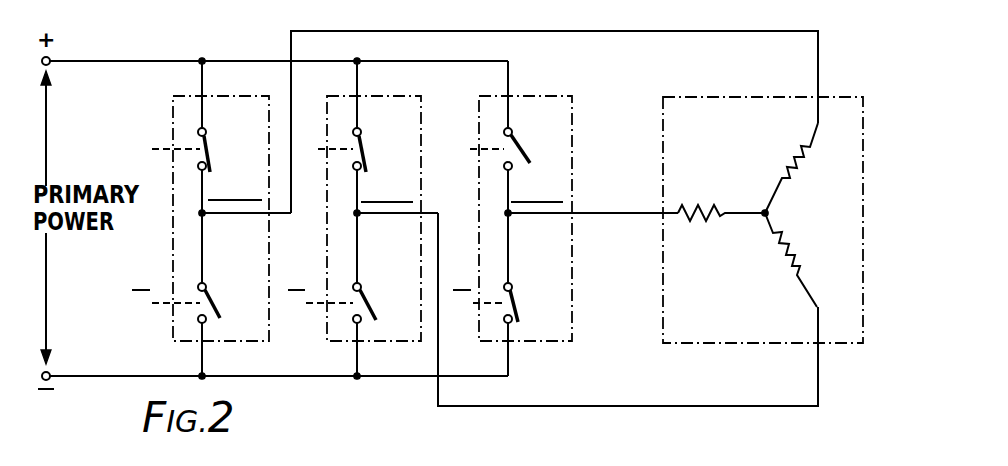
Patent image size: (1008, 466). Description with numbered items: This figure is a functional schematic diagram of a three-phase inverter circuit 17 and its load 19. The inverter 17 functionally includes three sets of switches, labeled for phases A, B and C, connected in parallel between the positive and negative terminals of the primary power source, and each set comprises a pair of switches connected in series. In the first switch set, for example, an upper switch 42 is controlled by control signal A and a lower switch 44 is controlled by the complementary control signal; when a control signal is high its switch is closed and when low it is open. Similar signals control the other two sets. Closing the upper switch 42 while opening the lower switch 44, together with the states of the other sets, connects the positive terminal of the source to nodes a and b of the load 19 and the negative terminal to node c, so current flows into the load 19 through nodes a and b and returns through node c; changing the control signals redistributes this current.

The three-phase inverter circuit 17 is at (197, 56).
The load 19 is at (890, 175).
The upper switch 42 is at (212, 150).
The lower switch 44 is at (210, 292).